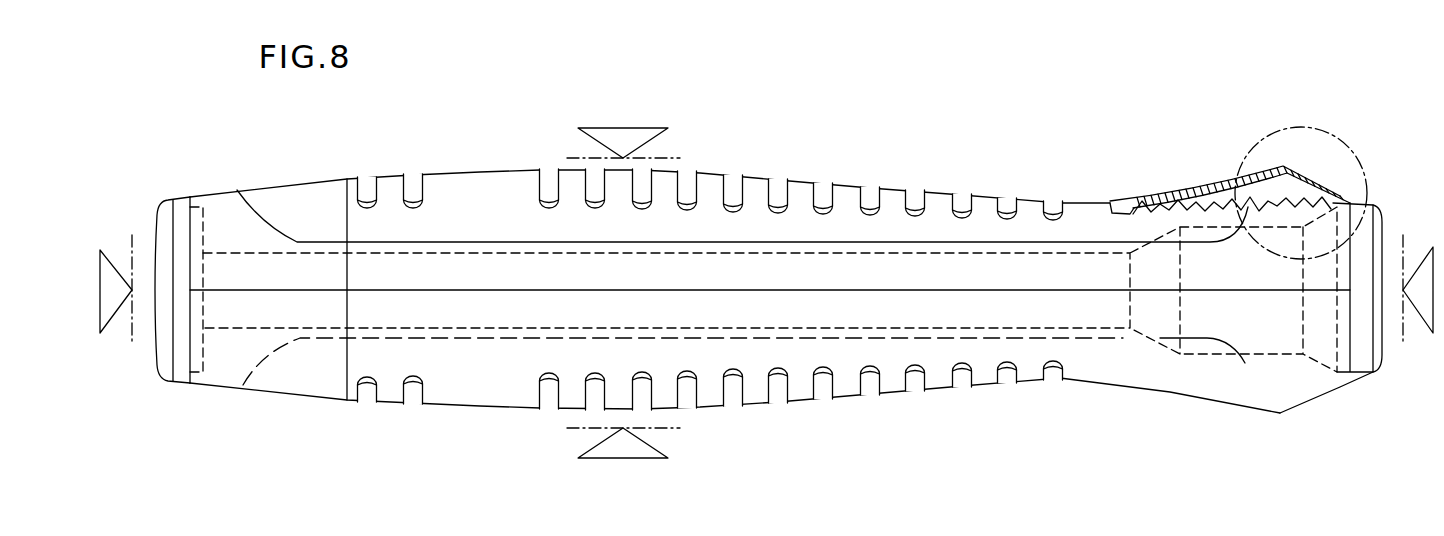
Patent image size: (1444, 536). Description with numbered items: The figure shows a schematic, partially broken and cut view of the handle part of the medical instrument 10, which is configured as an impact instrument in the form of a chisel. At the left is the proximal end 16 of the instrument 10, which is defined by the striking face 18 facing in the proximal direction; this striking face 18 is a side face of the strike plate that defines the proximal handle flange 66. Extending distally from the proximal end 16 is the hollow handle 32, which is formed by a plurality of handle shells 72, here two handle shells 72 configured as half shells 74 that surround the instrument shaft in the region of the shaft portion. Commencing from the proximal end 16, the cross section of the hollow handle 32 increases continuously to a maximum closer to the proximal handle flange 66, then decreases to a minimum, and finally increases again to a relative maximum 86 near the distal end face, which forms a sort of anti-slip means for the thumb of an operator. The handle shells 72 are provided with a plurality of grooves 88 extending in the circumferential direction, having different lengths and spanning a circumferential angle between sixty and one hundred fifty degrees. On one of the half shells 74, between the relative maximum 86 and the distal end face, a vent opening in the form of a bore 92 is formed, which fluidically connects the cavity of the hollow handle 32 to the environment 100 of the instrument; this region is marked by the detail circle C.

The medical instrument 10 is at (886, 148).
The proximal end 16 is at (157, 303).
The striking face 18 is at (157, 274).
The proximal handle flange 66 is at (181, 203).
The half shells 74 is at (484, 157).
The grooves 88 is at (365, 192).
The hollow handle 32 is at (468, 422).
The handle shells 72 is at (854, 414).
The relative maximum 86 is at (1280, 413).
The bore 92 is at (1310, 187).
The environment 100 is at (1040, 155).
The detail C is at (1352, 148).